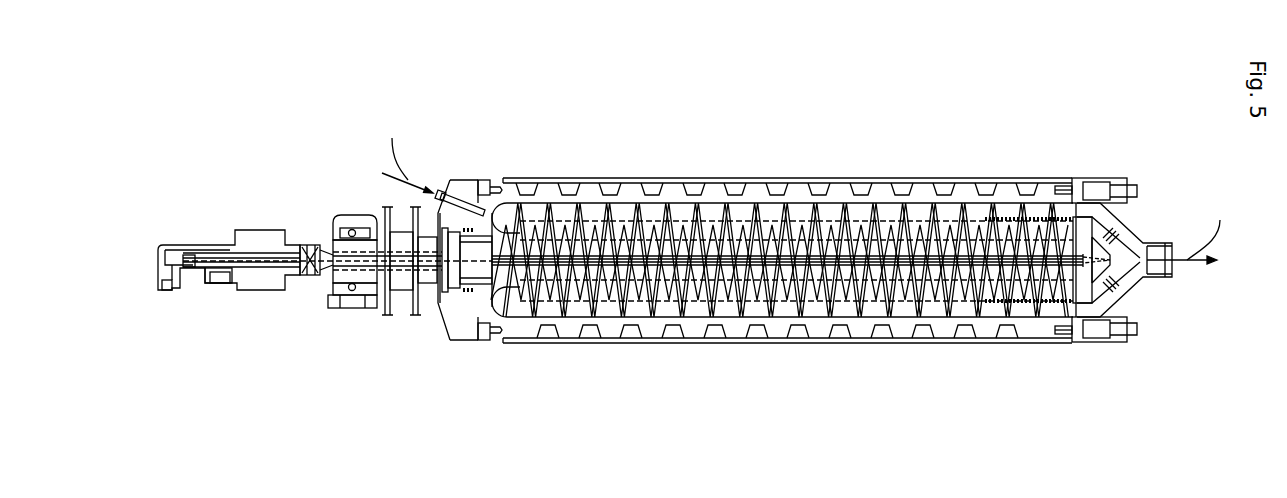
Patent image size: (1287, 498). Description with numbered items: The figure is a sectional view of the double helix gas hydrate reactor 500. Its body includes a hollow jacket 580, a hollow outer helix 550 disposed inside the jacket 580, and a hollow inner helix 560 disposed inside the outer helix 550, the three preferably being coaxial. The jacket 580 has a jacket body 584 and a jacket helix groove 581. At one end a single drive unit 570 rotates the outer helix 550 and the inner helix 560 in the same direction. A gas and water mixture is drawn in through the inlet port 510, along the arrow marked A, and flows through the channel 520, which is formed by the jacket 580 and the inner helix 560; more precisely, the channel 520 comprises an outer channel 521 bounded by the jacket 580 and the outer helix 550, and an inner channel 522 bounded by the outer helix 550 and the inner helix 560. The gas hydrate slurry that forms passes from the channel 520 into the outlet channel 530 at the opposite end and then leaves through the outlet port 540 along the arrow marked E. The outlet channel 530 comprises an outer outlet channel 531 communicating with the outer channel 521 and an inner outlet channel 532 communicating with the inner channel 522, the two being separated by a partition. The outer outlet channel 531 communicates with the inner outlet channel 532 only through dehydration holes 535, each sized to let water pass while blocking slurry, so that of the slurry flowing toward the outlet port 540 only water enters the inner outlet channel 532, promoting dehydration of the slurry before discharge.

The double helix gas hydrate reactor 500 is at (232, 94).
The inlet port 510 is at (442, 195).
The channel 520 is at (587, 96).
The outer channel 521 is at (531, 205).
The inner channel 522 is at (561, 228).
The outlet channel 530 is at (1217, 160).
The outer outlet channel 531 is at (1098, 228).
The inner outlet channel 532 is at (1107, 245).
The dehydration holes 535 is at (1087, 292).
The outlet port 540 is at (1157, 266).
The outer helix 550 is at (625, 215).
The inner helix 560 is at (855, 300).
The drive unit 570 is at (256, 293).
The jacket 580 is at (563, 422).
The jacket helix groove 581 is at (546, 332).
The jacket body 584 is at (575, 327).